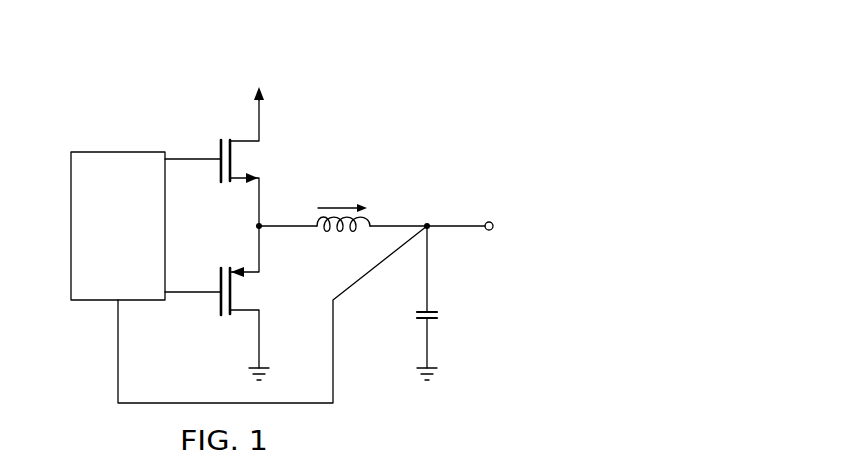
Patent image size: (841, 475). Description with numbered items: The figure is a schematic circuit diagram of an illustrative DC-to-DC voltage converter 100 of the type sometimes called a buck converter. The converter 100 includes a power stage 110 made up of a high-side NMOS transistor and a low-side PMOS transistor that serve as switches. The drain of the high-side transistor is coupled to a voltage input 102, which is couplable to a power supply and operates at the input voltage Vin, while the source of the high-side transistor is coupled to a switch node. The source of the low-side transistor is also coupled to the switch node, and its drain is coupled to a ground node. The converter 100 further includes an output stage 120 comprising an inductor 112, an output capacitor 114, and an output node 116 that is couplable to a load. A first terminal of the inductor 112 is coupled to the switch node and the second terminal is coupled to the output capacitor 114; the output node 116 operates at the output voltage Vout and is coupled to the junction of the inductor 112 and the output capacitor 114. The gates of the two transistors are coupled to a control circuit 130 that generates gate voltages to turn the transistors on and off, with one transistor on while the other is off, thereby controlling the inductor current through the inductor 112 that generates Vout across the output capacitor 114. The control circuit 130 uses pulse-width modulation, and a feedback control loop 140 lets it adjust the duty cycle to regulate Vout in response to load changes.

The DC-to-DC voltage converter 100 is at (452, 63).
The voltage input 102 is at (259, 120).
The power stage 110 is at (186, 99).
The inductor 112 is at (333, 232).
The output capacitor 114 is at (437, 315).
The output node 116 is at (490, 221).
The output stage 120 is at (378, 256).
The control circuit 130 is at (71, 228).
The feedback control loop 140 is at (227, 403).